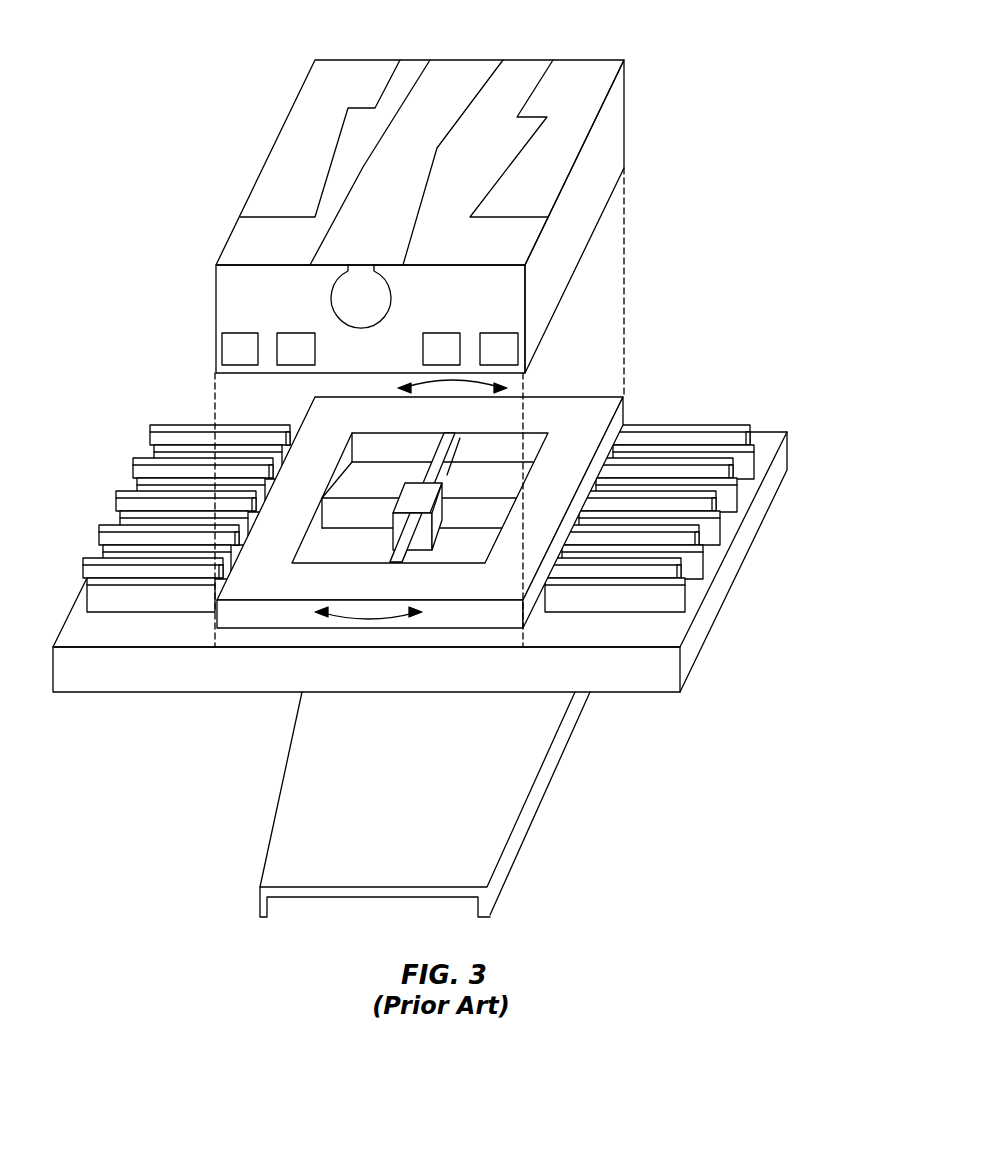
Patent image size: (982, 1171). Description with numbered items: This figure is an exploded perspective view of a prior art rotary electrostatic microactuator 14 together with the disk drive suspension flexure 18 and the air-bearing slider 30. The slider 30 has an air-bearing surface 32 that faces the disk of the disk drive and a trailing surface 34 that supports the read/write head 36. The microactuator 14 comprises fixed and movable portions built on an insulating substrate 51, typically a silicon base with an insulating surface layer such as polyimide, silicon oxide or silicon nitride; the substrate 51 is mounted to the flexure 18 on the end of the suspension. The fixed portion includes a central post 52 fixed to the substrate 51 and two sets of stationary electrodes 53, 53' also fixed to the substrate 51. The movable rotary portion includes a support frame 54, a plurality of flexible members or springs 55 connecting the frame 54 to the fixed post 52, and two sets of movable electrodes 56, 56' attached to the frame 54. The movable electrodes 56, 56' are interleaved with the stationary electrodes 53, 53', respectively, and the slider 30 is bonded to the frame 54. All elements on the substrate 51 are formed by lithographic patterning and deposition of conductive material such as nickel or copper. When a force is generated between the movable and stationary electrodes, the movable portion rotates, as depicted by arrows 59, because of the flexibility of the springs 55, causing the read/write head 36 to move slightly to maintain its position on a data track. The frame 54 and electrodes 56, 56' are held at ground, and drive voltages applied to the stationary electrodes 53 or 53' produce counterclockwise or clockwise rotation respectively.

The rotary electrostatic microactuator 14 is at (802, 403).
The disk drive suspension flexure 18 is at (487, 857).
The air-bearing slider 30 is at (616, 118).
The air-bearing surface 32 is at (449, 78).
The trailing surface 34 is at (235, 294).
The read/write head 36 is at (378, 305).
The insulating substrate 51 is at (73, 682).
The central post 52 is at (448, 480).
The stationary electrodes 53 is at (164, 511).
The stationary electrodes 53' is at (681, 525).
The support frame 54 is at (598, 407).
The flexible members or springs 55 is at (430, 473).
The movable electrodes 56 is at (114, 515).
The movable electrodes 56' is at (702, 514).
The arrows 59 is at (450, 385).